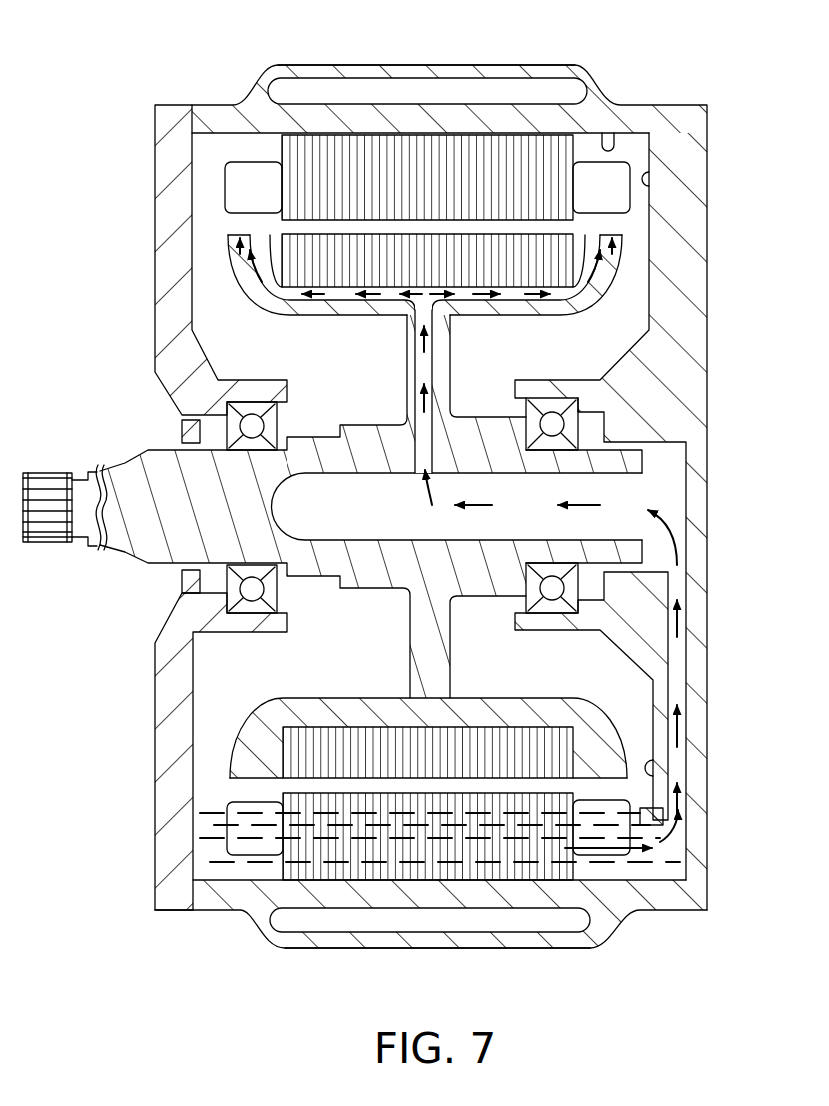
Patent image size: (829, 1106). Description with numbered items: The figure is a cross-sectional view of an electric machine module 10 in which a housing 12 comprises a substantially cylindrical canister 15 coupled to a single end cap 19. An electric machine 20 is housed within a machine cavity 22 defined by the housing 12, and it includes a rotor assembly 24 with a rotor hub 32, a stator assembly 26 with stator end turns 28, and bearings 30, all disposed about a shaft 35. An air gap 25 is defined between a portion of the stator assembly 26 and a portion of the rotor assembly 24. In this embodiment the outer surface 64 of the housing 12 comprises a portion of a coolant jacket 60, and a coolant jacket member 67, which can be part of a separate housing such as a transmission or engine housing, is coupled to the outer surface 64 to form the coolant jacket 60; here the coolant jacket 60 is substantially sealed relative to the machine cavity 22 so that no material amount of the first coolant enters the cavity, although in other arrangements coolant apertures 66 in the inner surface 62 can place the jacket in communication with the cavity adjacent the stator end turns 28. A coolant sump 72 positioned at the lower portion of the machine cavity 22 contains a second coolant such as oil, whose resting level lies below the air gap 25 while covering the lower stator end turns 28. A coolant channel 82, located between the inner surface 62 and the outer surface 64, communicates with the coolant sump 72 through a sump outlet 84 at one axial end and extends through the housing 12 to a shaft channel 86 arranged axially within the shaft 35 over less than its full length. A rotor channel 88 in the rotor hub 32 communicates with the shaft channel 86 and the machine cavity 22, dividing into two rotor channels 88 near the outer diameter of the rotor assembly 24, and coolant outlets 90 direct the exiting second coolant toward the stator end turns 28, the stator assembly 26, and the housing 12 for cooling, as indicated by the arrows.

The electric machine module 10 is at (668, 60).
The housing 12 is at (707, 104).
The substantially cylindrical canister 15 is at (697, 238).
The single end cap 19 is at (155, 122).
The electric machine 20 is at (232, 298).
The machine cavity 22 is at (632, 266).
The rotor assembly 24 is at (232, 262).
The air gap 25 is at (283, 793).
The stator assembly 26 is at (355, 165).
The stator end turns 28 is at (232, 192).
The bearings 30 is at (250, 426).
The rotor hub 32 is at (407, 378).
The shaft 35 is at (48, 472).
The coolant jacket 60 is at (375, 90).
The inner surface 62 is at (652, 764).
The outer surface 64 is at (218, 106).
The coolant apertures 66 is at (608, 150).
The coolant jacket member 67 is at (428, 68).
The coolant sump 72 is at (232, 830).
The coolant channel 82 is at (678, 670).
The sump outlet 84 is at (660, 840).
The shaft channel 86 is at (506, 503).
The rotor channel 88 is at (423, 365).
The coolant outlets 90 is at (247, 232).